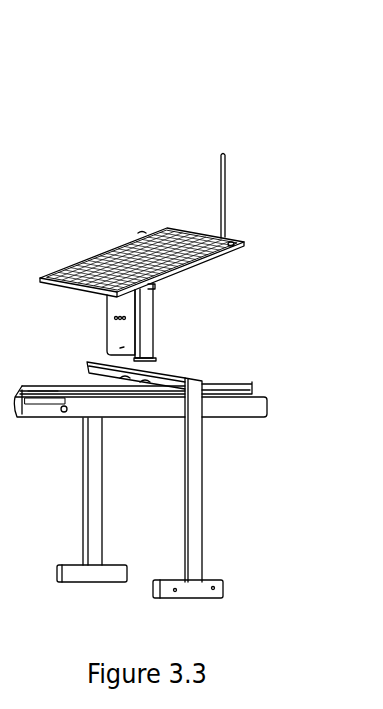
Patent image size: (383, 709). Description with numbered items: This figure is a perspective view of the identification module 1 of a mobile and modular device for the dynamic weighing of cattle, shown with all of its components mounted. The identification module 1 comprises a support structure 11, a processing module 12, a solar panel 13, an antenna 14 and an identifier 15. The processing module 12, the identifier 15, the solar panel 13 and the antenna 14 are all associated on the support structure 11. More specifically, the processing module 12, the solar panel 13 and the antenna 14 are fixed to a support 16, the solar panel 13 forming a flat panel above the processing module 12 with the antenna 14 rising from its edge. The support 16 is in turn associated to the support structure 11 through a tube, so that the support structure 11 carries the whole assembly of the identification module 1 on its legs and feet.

The identification module 1 is at (276, 109).
The support structure 11 is at (194, 522).
The processing module 12 is at (99, 327).
The solar panel 13 is at (102, 247).
The antenna 14 is at (219, 190).
The identifier 15 is at (241, 396).
The support 16 is at (158, 360).